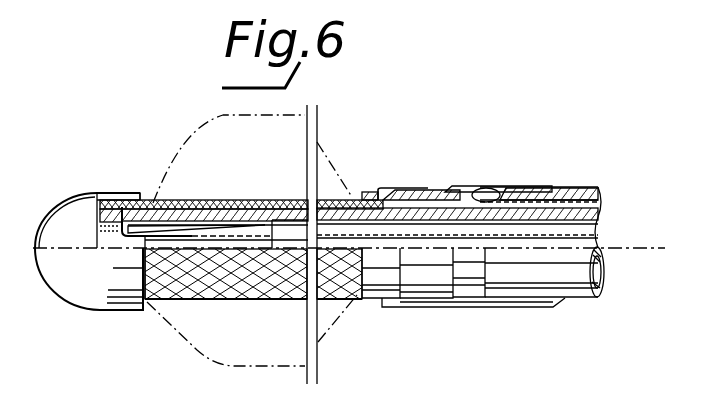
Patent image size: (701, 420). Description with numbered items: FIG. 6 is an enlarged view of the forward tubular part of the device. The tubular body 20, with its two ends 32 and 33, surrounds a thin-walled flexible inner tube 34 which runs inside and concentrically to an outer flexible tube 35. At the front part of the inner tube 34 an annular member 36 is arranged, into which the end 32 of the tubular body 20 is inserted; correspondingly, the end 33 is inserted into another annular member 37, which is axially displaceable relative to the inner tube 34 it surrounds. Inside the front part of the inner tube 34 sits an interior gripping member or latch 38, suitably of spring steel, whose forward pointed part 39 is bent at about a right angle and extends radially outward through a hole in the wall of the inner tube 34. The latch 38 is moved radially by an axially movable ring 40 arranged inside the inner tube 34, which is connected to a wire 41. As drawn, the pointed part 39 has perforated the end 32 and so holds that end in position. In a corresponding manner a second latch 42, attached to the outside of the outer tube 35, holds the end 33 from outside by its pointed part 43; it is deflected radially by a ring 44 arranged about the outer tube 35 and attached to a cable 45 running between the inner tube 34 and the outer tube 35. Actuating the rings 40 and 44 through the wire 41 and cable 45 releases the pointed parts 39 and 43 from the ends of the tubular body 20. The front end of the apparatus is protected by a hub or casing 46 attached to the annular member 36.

The tubular body 20 is at (198, 203).
The end of tubular body 32 is at (112, 193).
The end of tubular body 33 is at (387, 187).
The inner flexible tube 34 is at (282, 203).
The outer flexible tube 35 is at (567, 193).
The annular member 36 is at (98, 200).
The annular member 37 is at (420, 190).
The latch 38 is at (233, 215).
The pointed part 39 is at (123, 200).
The ring 40 is at (158, 205).
The wire 41 is at (590, 233).
The latch 42 is at (447, 190).
The pointed part 43 is at (370, 192).
The ring 44 is at (470, 188).
The cable 45 is at (525, 200).
The hub or casing 46 is at (57, 212).